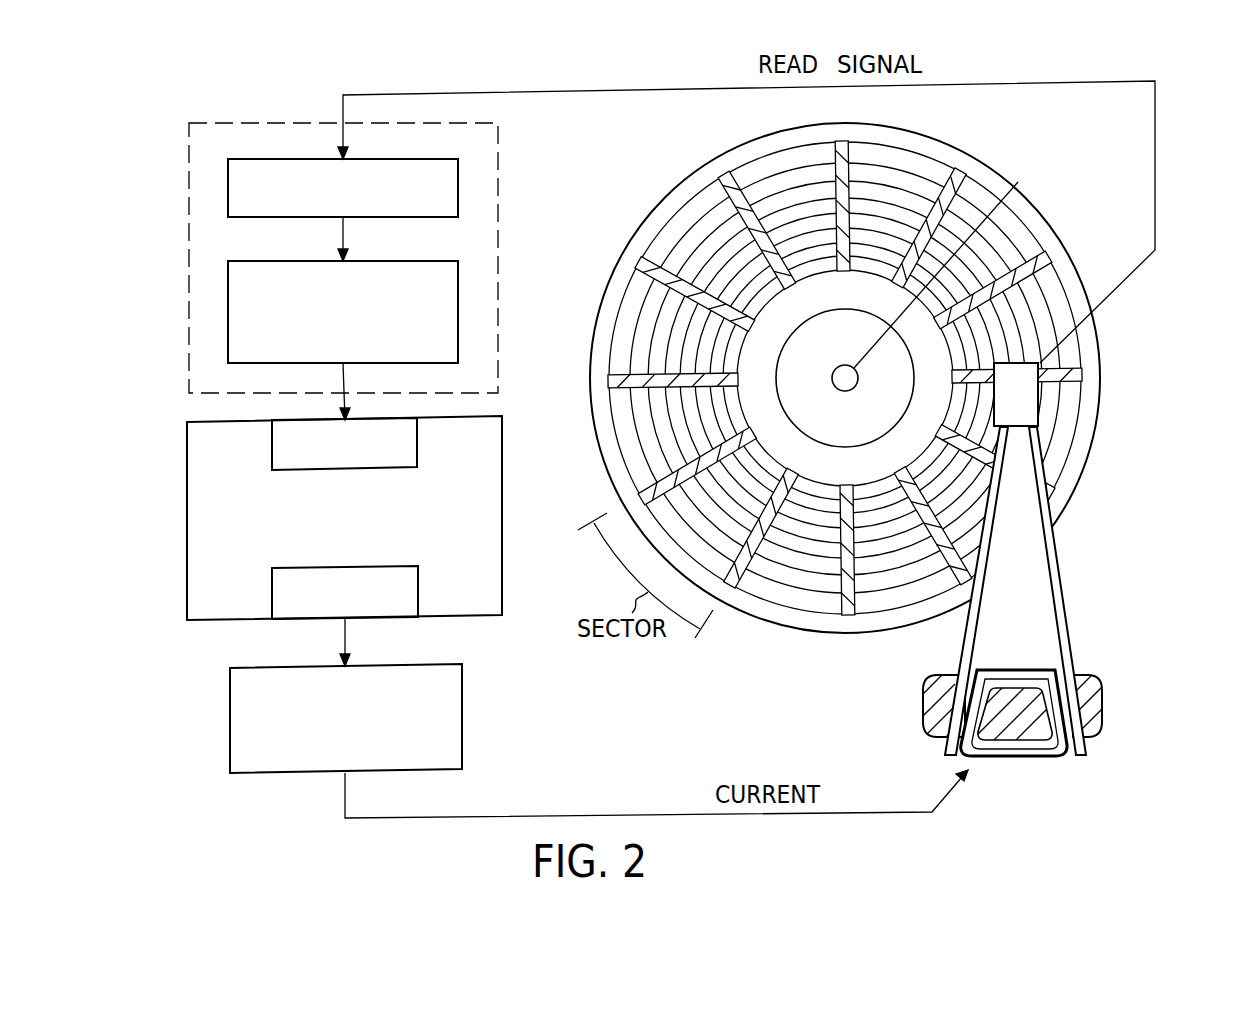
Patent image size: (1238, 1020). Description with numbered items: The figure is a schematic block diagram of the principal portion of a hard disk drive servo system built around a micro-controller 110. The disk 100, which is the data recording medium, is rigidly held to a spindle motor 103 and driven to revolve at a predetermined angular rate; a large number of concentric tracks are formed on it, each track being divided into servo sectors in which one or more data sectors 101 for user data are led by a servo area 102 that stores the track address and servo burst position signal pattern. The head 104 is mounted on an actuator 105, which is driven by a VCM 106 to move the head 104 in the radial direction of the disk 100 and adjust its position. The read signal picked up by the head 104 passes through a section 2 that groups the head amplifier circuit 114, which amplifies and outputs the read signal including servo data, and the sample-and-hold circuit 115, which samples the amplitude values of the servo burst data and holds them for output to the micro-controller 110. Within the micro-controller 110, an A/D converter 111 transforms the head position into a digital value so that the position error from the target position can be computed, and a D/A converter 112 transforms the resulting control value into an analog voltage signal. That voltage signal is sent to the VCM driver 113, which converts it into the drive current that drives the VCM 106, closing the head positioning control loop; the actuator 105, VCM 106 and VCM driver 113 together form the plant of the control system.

The head signal processing section 2 is at (189, 224).
The disk 100 is at (668, 185).
The data sectors 101 is at (613, 318).
The servo area 102 is at (848, 143).
The spindle motor 103 is at (959, 265).
The head 104 is at (1038, 417).
The actuator 105 is at (1058, 555).
The VCM 106 is at (1105, 700).
The micro-controller 110 is at (187, 527).
The A/D converter 111 is at (272, 447).
The D/A converter 112 is at (272, 593).
The VCM driver 113 is at (230, 704).
The head amplifier circuit 114 is at (278, 158).
The sample-and-hold circuit 115 is at (413, 261).